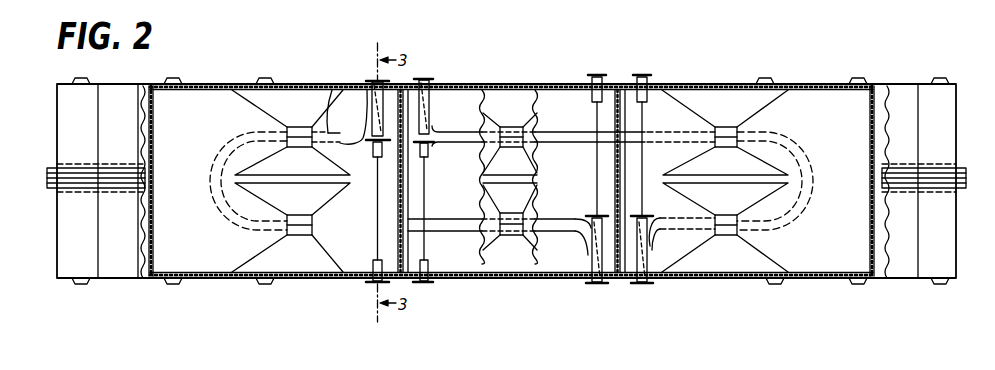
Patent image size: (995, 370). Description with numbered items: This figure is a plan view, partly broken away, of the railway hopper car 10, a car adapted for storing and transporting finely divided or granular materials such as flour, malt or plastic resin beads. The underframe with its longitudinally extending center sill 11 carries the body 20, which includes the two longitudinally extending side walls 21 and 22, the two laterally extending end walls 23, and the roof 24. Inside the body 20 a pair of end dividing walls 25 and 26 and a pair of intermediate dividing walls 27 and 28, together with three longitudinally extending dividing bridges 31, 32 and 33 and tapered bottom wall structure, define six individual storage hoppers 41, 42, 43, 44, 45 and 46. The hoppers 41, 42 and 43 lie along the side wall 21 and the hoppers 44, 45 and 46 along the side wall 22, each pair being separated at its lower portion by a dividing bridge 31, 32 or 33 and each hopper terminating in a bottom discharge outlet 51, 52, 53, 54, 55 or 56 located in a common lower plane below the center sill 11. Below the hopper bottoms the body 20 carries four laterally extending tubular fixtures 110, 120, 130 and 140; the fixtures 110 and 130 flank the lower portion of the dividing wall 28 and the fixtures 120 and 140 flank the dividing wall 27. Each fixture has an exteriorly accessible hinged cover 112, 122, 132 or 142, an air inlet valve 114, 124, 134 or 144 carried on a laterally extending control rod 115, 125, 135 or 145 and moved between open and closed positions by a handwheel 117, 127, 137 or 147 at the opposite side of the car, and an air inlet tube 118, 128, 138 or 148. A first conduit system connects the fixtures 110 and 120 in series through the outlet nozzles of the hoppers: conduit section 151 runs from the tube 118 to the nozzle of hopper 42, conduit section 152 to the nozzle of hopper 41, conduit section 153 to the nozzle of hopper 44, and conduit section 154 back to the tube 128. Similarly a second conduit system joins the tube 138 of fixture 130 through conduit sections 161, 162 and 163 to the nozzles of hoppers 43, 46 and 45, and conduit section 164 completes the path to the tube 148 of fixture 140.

The railway hopper car 10 is at (52, 103).
The body 20 is at (52, 142).
The side wall 21 is at (219, 282).
The side wall 22 is at (220, 87).
The end walls 23 is at (57, 229).
The roof 24 is at (120, 96).
The end dividing wall 25 is at (153, 121).
The end dividing wall 26 is at (870, 105).
The center sill 11 is at (152, 184).
The intermediate dividing wall 27 is at (405, 212).
The intermediate dividing wall 28 is at (621, 152).
The dividing bridge 31 is at (279, 178).
The dividing bridge 32 is at (498, 178).
The dividing bridge 33 is at (700, 178).
The storage hopper 41 is at (303, 280).
The storage hopper 42 is at (513, 276).
The storage hopper 43 is at (725, 278).
The storage hopper 44 is at (314, 74).
The storage hopper 45 is at (504, 91).
The storage hopper 46 is at (697, 93).
The bottom discharge outlet 51 is at (308, 215).
The bottom discharge outlet 52 is at (512, 215).
The bottom discharge outlet 53 is at (727, 215).
The bottom discharge outlet 54 is at (299, 127).
The bottom discharge outlet 55 is at (510, 123).
The bottom discharge outlet 56 is at (723, 127).
The tubular fixture 110 is at (585, 263).
The hinged cover 112 is at (597, 285).
The air inlet valve 114 is at (590, 214).
The control rod 115 is at (595, 148).
The handwheel 117 is at (597, 77).
The air inlet tube 118 is at (585, 244).
The tubular fixture 120 is at (321, 116).
The hinged cover 122 is at (373, 81).
The air inlet valve 124 is at (364, 152).
The control rod 125 is at (376, 246).
The handwheel 127 is at (368, 283).
The air inlet tube 128 is at (347, 117).
The tubular fixture 130 is at (651, 262).
The hinged cover 132 is at (643, 285).
The air inlet valve 134 is at (644, 216).
The control rod 135 is at (650, 133).
The handwheel 137 is at (642, 76).
The air inlet tube 138 is at (655, 230).
The tubular fixture 140 is at (430, 100).
The hinged cover 142 is at (432, 78).
The air inlet valve 144 is at (432, 144).
The control rod 145 is at (428, 248).
The handwheel 147 is at (434, 285).
The air inlet tube 148 is at (435, 128).
The conduit section 151 is at (545, 214).
The conduit section 152 is at (445, 226).
The conduit section 153 is at (224, 222).
The conduit section 154 is at (343, 122).
The conduit section 161 is at (680, 222).
The conduit section 162 is at (790, 222).
The conduit section 163 is at (553, 130).
The conduit section 164 is at (454, 176).